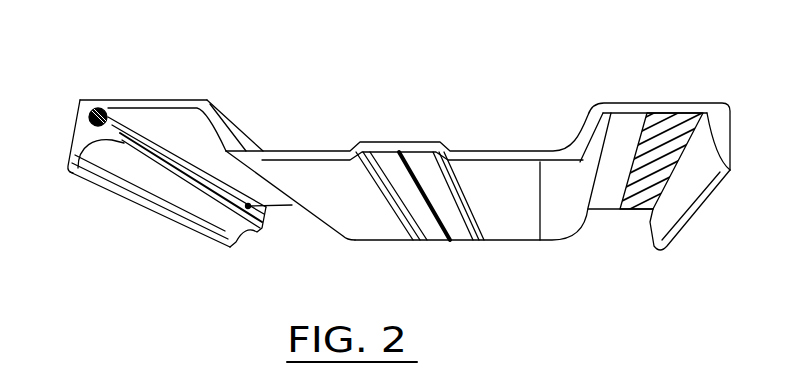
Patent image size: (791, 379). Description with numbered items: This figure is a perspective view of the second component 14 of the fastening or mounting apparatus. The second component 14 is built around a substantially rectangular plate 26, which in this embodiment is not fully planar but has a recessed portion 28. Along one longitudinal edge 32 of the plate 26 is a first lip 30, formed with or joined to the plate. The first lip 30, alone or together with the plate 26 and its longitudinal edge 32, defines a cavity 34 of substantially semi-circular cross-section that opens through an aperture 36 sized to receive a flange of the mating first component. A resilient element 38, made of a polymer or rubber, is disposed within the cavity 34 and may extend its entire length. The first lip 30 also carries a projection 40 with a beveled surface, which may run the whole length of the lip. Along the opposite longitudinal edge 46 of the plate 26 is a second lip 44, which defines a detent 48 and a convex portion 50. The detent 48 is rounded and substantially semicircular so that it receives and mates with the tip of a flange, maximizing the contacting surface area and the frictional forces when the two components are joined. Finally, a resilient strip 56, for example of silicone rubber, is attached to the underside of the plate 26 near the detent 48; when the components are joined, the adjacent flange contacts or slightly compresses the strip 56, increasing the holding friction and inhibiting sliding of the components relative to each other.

The second component 14 is at (605, 75).
The plate 26 is at (514, 209).
The recessed portion 28 is at (577, 90).
The first lip 30 is at (80, 100).
The longitudinal edge 32 is at (112, 101).
The cavity 34 is at (99, 106).
The aperture 36 is at (262, 210).
The resilient element 38 is at (87, 115).
The projection 40 is at (127, 134).
The second lip 44 is at (722, 135).
The longitudinal edge 46 is at (705, 108).
The detent 48 is at (647, 210).
The convex portion 50 is at (660, 223).
The resilient strip 56 is at (650, 112).